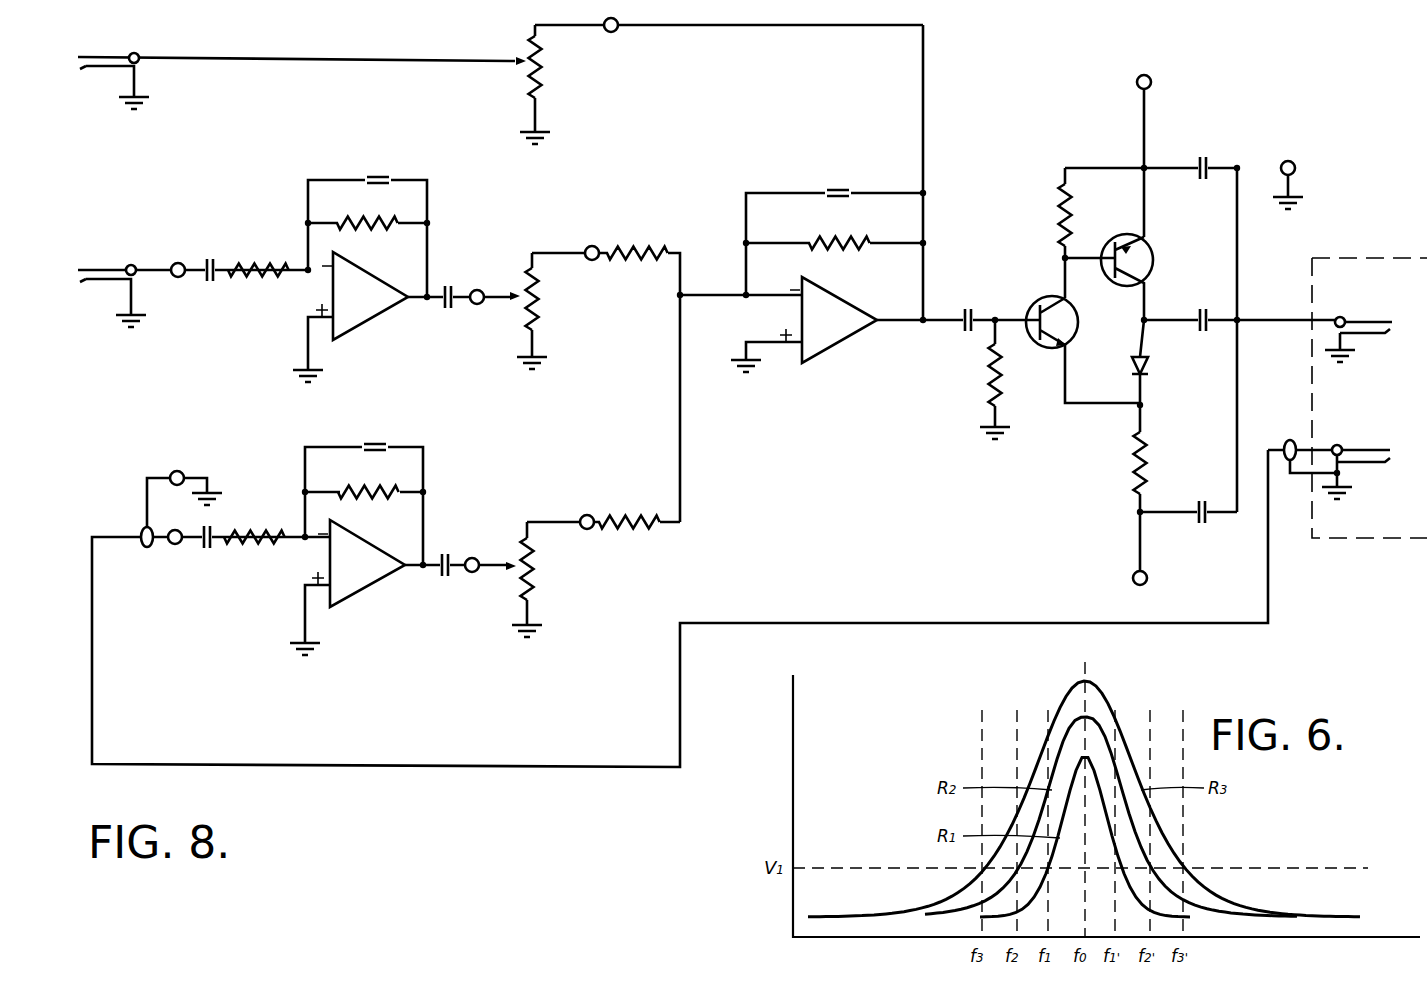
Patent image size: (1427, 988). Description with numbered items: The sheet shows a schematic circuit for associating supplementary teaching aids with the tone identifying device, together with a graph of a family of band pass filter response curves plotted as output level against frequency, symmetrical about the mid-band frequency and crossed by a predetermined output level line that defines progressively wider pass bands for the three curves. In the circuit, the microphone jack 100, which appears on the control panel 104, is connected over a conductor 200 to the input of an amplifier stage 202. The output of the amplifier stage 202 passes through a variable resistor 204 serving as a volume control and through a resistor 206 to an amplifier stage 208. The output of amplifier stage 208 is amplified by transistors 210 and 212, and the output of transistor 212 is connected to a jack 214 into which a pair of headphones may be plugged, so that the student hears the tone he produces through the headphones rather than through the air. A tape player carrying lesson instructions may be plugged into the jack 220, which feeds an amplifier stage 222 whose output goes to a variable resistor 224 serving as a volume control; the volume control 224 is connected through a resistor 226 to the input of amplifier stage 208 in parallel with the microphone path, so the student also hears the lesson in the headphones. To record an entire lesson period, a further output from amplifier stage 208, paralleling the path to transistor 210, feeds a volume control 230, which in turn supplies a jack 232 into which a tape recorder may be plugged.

The jack 232 is at (110, 57).
The volume control 230 is at (527, 62).
The jack 220 is at (118, 250).
The amplifier stage 222 is at (358, 325).
The variable resistor 224 is at (538, 315).
The resistor 226 is at (628, 252).
The amplifier stage 208 is at (835, 348).
The transistor 210 is at (1034, 300).
The transistor 212 is at (1150, 250).
The control panel 104 is at (1392, 257).
The jack 214 is at (1370, 320).
The microphone jack 100 is at (1370, 448).
The conductor 200 is at (498, 765).
The amplifier stage 202 is at (358, 595).
The variable resistor 204 is at (535, 580).
The resistor 206 is at (633, 518).